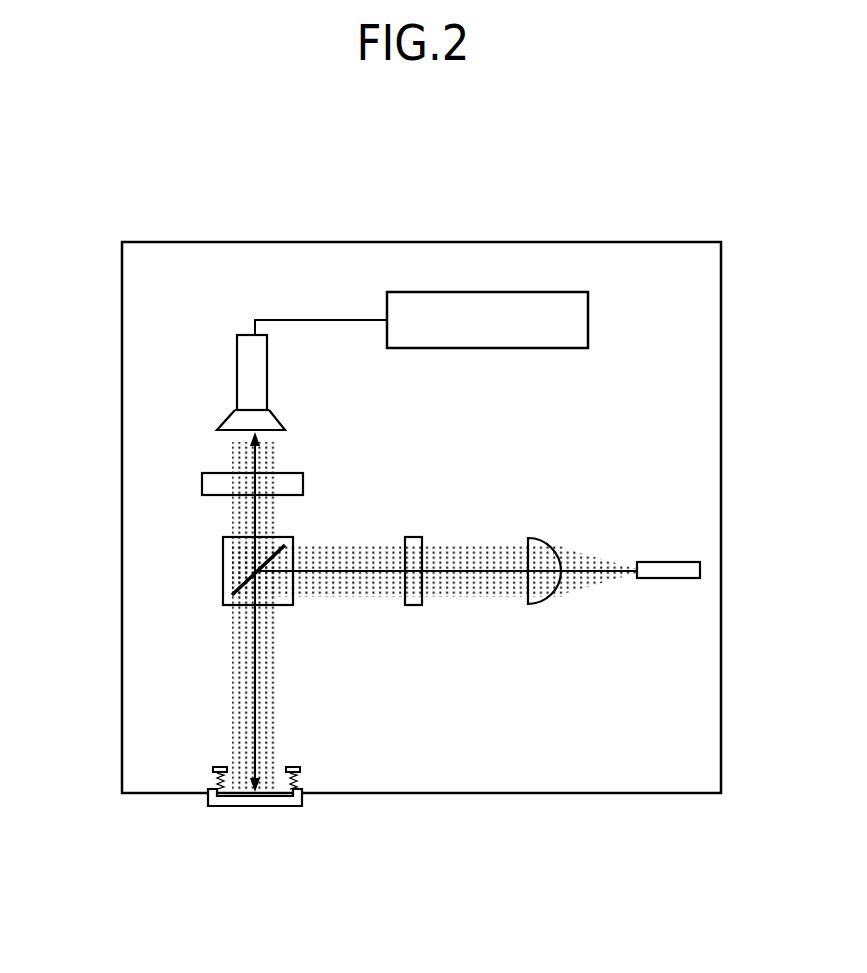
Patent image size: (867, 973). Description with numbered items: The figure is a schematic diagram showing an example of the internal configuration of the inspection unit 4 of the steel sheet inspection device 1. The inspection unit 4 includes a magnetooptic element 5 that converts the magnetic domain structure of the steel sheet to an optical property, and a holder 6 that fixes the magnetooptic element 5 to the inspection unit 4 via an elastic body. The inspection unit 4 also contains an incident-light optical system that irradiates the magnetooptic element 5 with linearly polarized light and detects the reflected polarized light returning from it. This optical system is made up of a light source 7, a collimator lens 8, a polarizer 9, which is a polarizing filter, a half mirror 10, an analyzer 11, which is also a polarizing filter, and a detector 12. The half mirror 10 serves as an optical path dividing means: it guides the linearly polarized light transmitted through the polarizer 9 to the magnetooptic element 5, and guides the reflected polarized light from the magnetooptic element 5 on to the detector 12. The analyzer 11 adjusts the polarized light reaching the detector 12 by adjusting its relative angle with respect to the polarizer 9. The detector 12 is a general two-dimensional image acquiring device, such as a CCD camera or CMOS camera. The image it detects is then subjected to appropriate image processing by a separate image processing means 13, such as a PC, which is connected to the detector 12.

The steel sheet inspection device 1 is at (130, 204).
The inspection unit 4 is at (603, 242).
The magnetooptic element 5 is at (255, 808).
The holder 6 is at (208, 788).
The light source 7 is at (668, 562).
The collimator lens 8 is at (531, 538).
The polarizer 9 is at (412, 537).
The half mirror 10 is at (223, 571).
The analyzer 11 is at (303, 481).
The detector 12 is at (267, 370).
The image processing means 13 is at (588, 318).